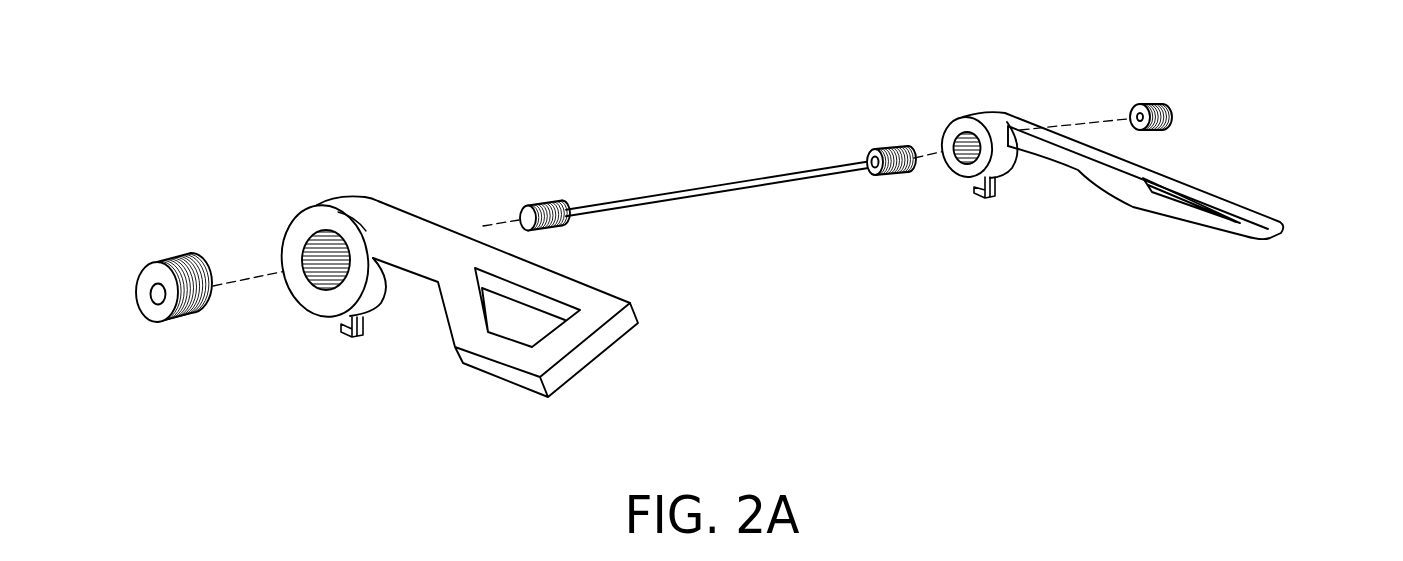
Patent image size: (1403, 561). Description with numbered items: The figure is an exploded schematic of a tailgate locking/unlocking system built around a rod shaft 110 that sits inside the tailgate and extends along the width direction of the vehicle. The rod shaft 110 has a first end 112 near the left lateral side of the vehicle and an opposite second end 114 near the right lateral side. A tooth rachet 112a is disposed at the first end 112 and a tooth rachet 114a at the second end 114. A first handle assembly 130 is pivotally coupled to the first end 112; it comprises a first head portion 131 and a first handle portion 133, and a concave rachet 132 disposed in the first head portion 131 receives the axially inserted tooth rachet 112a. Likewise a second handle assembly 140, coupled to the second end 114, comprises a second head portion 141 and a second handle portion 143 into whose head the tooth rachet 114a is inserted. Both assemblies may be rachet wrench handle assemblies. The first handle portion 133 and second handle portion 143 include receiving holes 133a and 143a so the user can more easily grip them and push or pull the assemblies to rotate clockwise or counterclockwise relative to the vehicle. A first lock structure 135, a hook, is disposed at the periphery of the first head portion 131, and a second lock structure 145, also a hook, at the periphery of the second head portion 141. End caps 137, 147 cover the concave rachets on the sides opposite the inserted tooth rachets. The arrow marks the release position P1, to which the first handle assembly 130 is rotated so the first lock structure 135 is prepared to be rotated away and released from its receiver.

The release position P1 is at (387, 398).
The rod shaft 110 is at (699, 171).
The first end 112 is at (567, 189).
The tooth rachet 112a is at (546, 203).
The second end 114 is at (883, 169).
The tooth rachet 114a is at (889, 150).
The first handle assembly 130 is at (402, 297).
The first head portion 131 is at (296, 210).
The concave rachet 132 is at (322, 264).
The first handle portion 133 is at (521, 296).
The receiving hole 133a is at (510, 333).
The first lock structure 135 is at (347, 335).
The end cap 137 is at (143, 270).
The second handle assembly 140 is at (1147, 152).
The second head portion 141 is at (990, 113).
The second handle portion 143 is at (1160, 196).
The receiving hole 143a is at (1190, 203).
The second lock structure 145 is at (990, 200).
The end cap 147 is at (1147, 102).